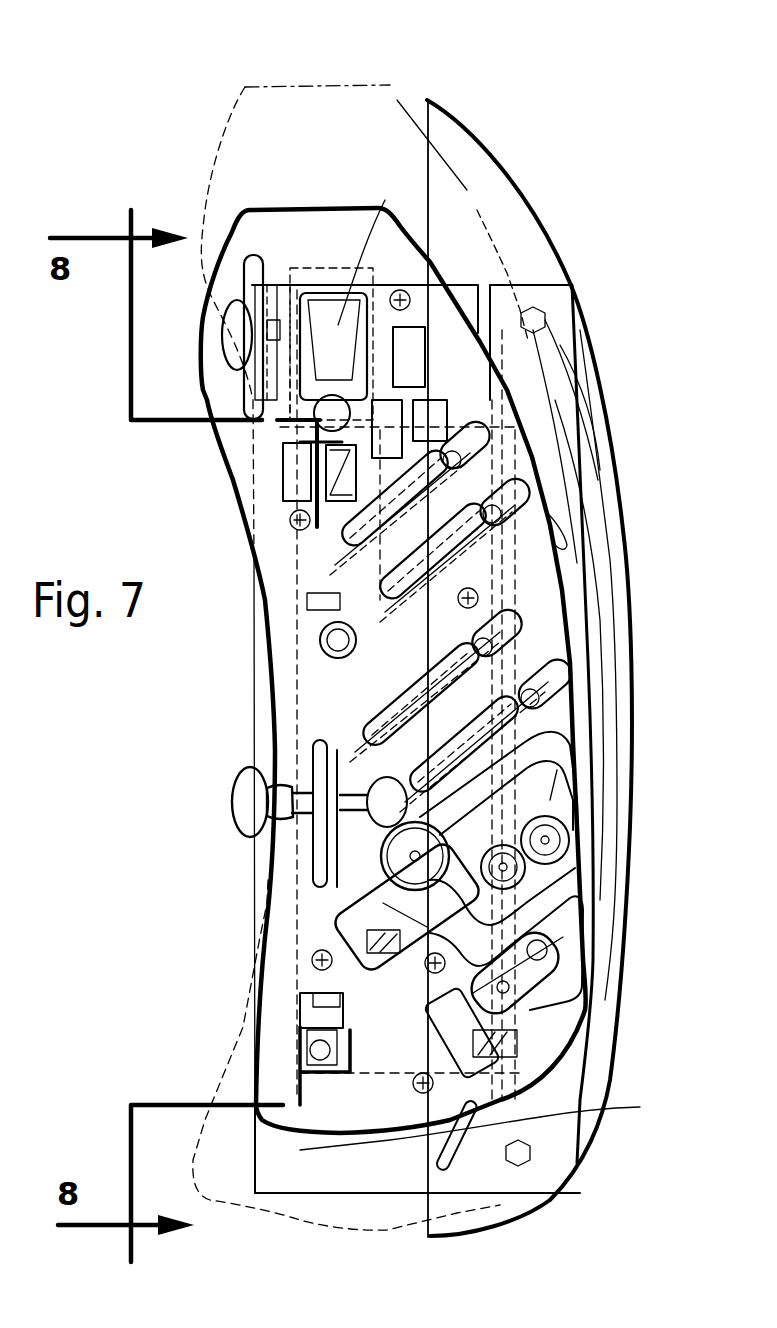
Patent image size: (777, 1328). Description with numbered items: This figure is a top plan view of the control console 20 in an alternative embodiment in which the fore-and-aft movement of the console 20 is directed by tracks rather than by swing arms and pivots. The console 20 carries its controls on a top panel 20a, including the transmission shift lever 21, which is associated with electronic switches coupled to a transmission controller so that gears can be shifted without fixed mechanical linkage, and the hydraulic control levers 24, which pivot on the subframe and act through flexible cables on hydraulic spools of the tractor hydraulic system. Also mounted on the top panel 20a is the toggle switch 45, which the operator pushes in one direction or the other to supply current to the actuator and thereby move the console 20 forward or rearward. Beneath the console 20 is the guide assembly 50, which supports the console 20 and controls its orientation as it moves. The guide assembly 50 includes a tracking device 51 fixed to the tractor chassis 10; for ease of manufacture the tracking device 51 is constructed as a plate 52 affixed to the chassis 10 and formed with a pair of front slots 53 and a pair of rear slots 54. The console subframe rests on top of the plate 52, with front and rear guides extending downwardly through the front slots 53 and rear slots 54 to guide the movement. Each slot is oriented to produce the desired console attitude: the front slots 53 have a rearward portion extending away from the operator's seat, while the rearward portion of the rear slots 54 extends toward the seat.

The tractor chassis 10 is at (533, 193).
The control console 20 is at (267, 84).
The top panel 20a is at (457, 353).
The transmission shift lever 21 is at (385, 200).
The hydraulic control levers 24 is at (523, 637).
The toggle switch 45 is at (317, 1023).
The guide assembly 50 is at (208, 449).
The tracking device 51 is at (339, 228).
The plate 52 is at (568, 299).
The front slots 53 is at (325, 313).
The rear slots 54 is at (265, 1130).